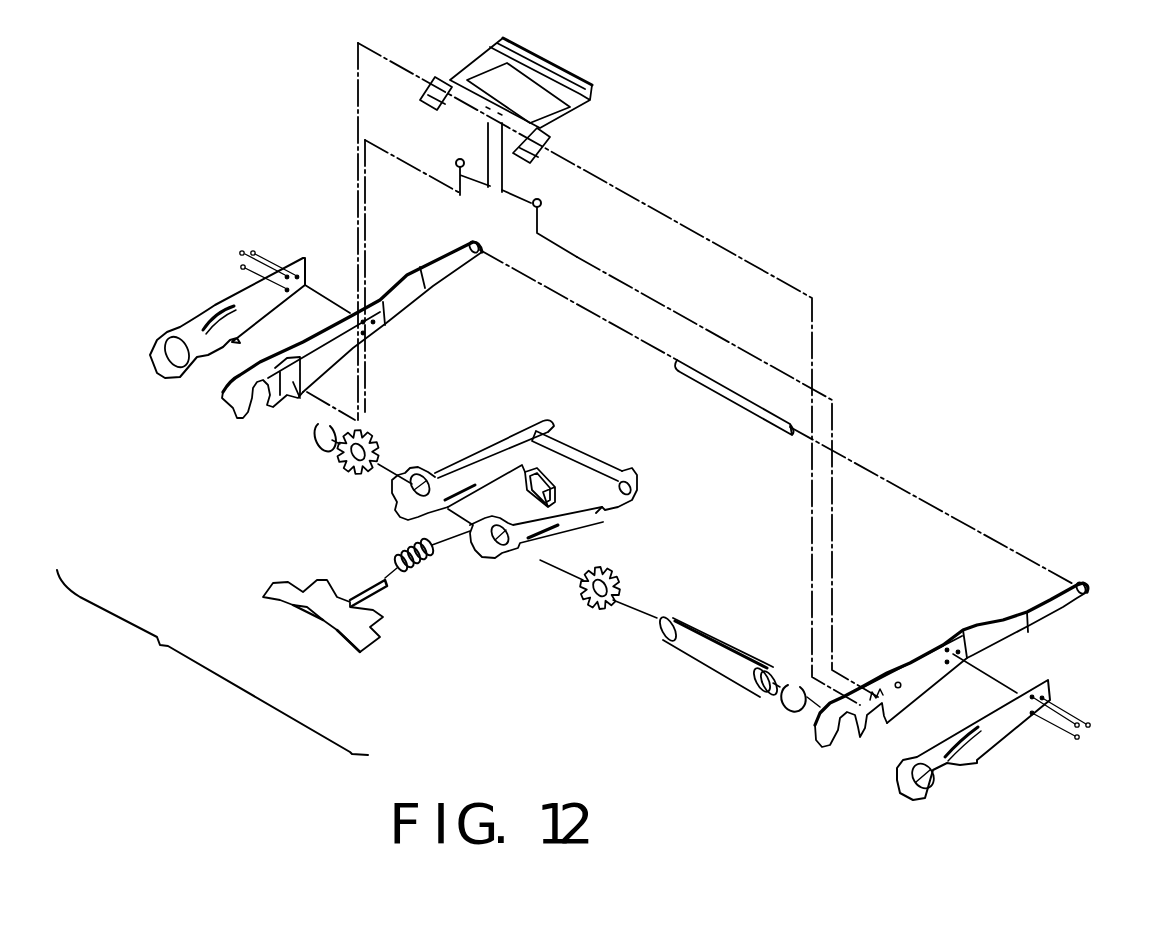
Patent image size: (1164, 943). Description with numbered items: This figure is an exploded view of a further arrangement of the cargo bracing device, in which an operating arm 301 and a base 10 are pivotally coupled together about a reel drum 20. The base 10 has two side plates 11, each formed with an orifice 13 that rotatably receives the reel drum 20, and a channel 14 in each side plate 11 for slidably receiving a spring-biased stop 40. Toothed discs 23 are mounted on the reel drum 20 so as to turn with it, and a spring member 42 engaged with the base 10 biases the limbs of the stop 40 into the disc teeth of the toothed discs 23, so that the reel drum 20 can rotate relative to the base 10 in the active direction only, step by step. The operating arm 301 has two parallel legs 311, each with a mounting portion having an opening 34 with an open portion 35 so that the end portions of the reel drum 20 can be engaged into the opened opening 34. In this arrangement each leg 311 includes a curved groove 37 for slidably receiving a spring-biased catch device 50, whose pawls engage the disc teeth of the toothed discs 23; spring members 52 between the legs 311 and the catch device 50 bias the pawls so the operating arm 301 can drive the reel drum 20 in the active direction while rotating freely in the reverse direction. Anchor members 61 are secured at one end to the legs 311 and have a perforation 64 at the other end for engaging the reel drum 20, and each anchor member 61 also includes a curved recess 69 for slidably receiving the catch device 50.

The base 10 is at (630, 502).
The side plates 11 is at (497, 457).
The orifice 13 is at (421, 474).
The channel 14 is at (538, 540).
The reel drum 20 is at (700, 657).
The toothed discs 23 is at (587, 607).
The opening 34 is at (255, 397).
The open portion 35 is at (840, 748).
The curved groove 37 is at (902, 678).
The spring-biased stop 40 is at (300, 600).
The spring member 42 is at (417, 572).
The spring-biased catch device 50 is at (467, 95).
The spring members 52 is at (530, 203).
The anchor members 61 is at (997, 737).
The perforation 64 is at (925, 783).
The curved recess 69 is at (208, 318).
The operating arm 301 is at (1068, 601).
The legs 311 is at (1003, 622).